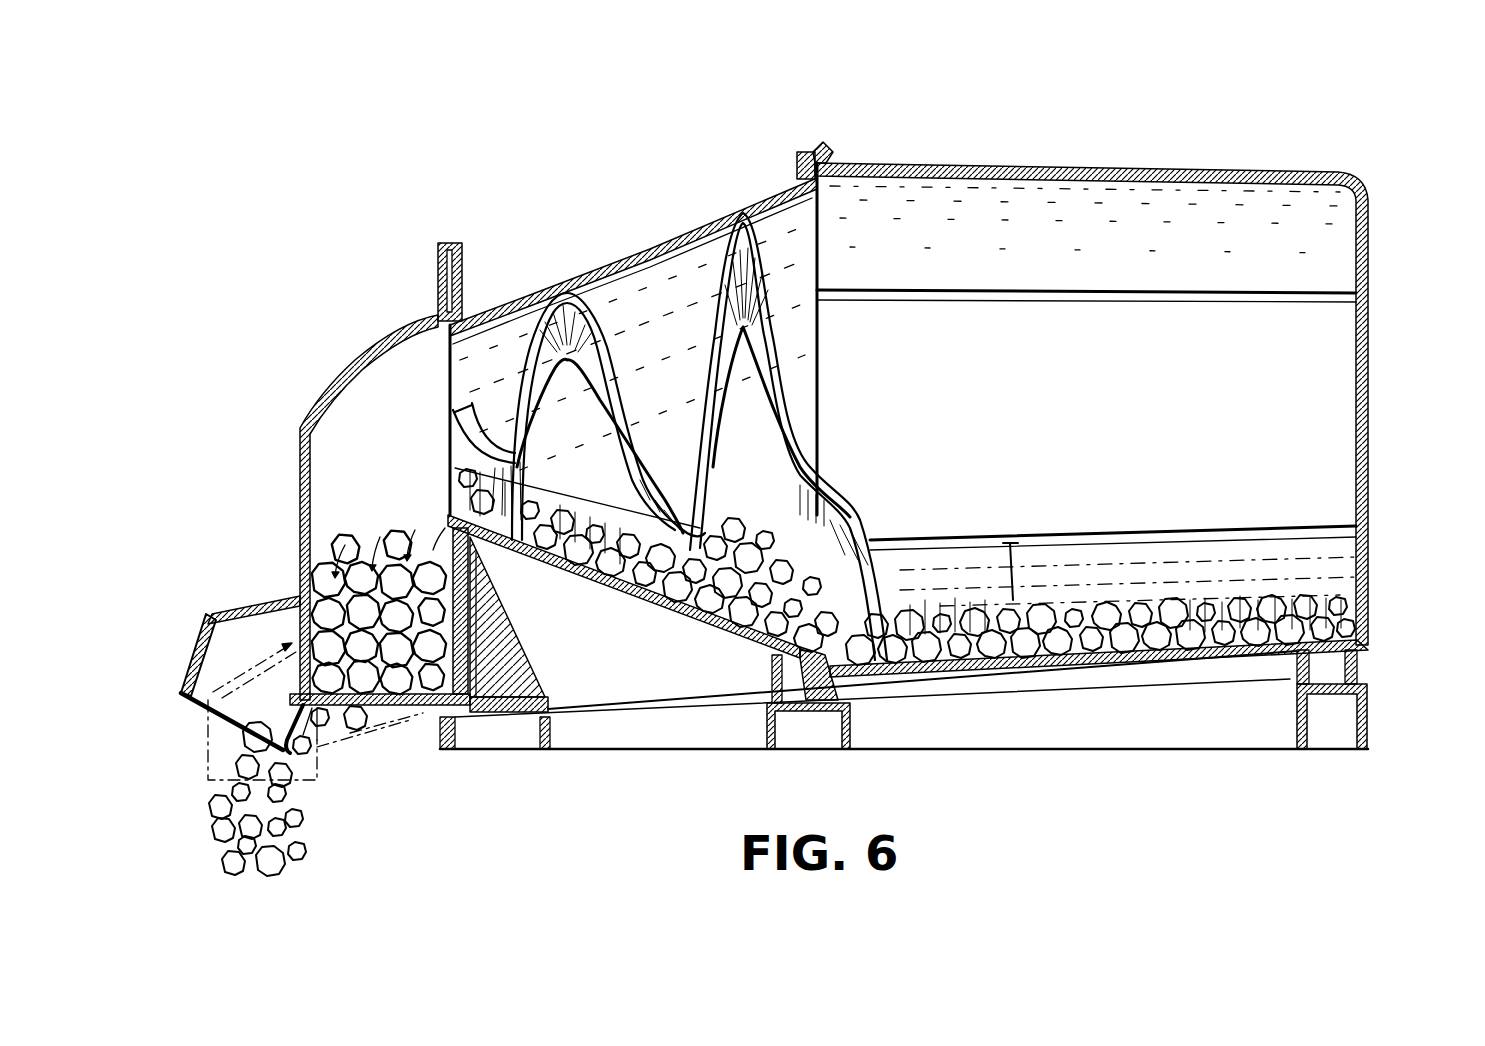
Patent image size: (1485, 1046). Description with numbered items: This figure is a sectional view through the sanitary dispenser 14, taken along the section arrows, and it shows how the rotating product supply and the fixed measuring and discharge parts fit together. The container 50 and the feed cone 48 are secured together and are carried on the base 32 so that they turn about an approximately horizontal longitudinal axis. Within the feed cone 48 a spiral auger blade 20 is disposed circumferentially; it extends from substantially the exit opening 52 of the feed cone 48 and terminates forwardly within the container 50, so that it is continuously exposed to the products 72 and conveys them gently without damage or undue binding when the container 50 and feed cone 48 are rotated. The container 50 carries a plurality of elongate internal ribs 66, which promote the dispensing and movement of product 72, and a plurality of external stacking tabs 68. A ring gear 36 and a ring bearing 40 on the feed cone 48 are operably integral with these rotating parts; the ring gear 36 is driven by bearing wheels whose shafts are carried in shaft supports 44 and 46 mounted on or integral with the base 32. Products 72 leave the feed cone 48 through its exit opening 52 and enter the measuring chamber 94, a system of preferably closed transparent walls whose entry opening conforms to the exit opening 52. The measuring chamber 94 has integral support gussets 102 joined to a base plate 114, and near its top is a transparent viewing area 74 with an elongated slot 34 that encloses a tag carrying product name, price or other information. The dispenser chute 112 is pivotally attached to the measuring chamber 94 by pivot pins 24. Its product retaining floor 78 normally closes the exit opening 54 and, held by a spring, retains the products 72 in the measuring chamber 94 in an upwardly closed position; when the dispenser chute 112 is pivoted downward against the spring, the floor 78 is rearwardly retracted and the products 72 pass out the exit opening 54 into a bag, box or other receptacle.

The sanitary dispenser 14 is at (262, 160).
The auger blade 20 is at (580, 300).
The pivot pins 24 is at (441, 710).
The base 32 is at (600, 752).
The elongated slot 34 is at (438, 274).
The ring gear 36 is at (799, 152).
The ring bearing 40 is at (823, 141).
The shaft support 44 is at (777, 697).
The shaft support 46 is at (1362, 660).
The feed cone 48 is at (673, 235).
The container 50 is at (962, 162).
The exit opening 52 is at (453, 372).
The exit opening 54 is at (210, 714).
The elongate internal ribs 66 is at (1148, 293).
The external stacking tabs 68 is at (1027, 288).
The products 72 is at (222, 844).
The transparent viewing area 74 is at (447, 292).
The product retaining floor 78 is at (415, 712).
The measuring chamber 94 is at (300, 470).
The support gussets 102 is at (495, 635).
The dispenser chute 112 is at (270, 598).
The base plate 114 is at (545, 700).